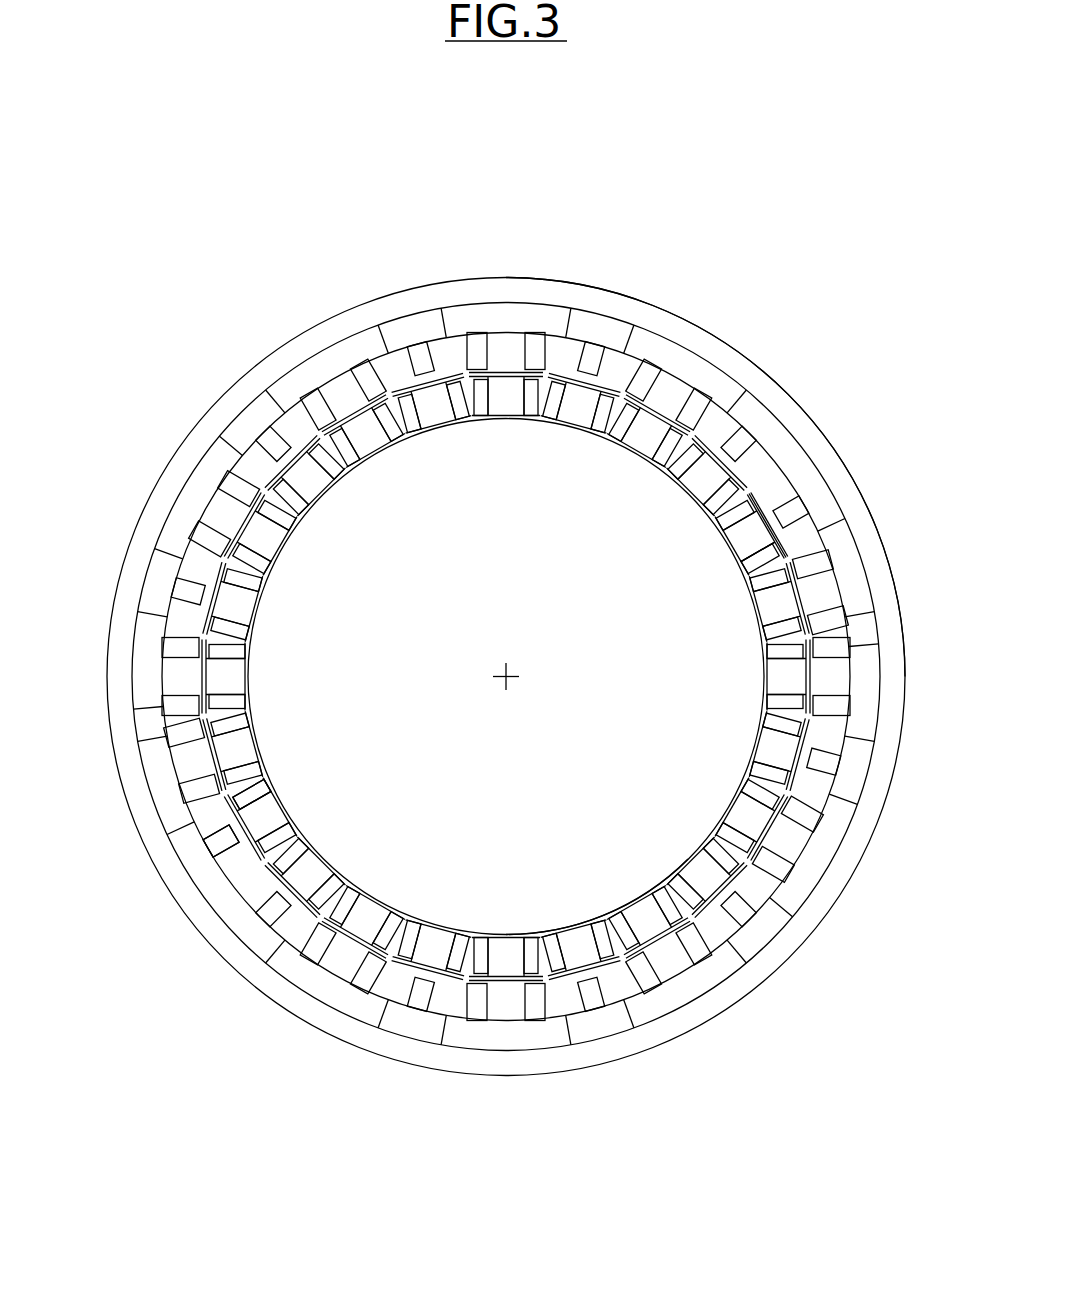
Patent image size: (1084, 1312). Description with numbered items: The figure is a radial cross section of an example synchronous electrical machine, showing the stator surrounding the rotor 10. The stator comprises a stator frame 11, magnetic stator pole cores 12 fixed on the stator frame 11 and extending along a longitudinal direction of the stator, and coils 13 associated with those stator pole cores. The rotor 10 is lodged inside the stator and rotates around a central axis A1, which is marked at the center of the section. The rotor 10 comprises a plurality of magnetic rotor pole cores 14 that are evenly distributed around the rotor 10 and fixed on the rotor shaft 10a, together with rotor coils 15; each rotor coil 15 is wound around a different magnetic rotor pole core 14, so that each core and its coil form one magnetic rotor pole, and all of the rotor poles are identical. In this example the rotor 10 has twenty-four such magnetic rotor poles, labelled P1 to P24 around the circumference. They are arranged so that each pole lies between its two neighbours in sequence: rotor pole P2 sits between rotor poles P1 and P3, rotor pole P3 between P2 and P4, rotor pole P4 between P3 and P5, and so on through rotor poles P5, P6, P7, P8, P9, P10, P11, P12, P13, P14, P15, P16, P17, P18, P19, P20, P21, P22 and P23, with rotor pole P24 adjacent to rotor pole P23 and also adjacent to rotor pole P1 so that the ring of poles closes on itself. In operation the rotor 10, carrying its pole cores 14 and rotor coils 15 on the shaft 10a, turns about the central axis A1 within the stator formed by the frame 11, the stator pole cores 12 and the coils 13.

The rotor 10 is at (750, 474).
The rotor shaft 10a is at (622, 765).
The stator frame 11 is at (630, 292).
The magnetic stator pole core 12 is at (217, 853).
The coil 13 is at (205, 817).
The magnetic rotor pole core 14 is at (756, 502).
The rotor coil 15 is at (765, 568).
The central axis A1 is at (508, 668).
The rotor pole P1 is at (508, 397).
The rotor pole P2 is at (580, 392).
The rotor pole P3 is at (668, 400).
The rotor pole P4 is at (718, 430).
The rotor pole P5 is at (758, 550).
The rotor pole P6 is at (776, 604).
The rotor pole P7 is at (785, 677).
The rotor pole P8 is at (800, 748).
The rotor pole P9 is at (760, 825).
The rotor pole P10 is at (722, 935).
The rotor pole P11 is at (663, 955).
The rotor pole P12 is at (582, 975).
The rotor pole P13 is at (507, 960).
The rotor pole P14 is at (432, 975).
The rotor pole P15 is at (350, 955).
The rotor pole P16 is at (290, 930).
The rotor pole P17 is at (200, 872).
The rotor pole P18 is at (200, 760).
The rotor pole P19 is at (220, 680).
The rotor pole P20 is at (215, 596).
The rotor pole P21 is at (240, 510).
The rotor pole P22 is at (290, 430).
The rotor pole P23 is at (350, 400).
The rotor pole P24 is at (435, 380).